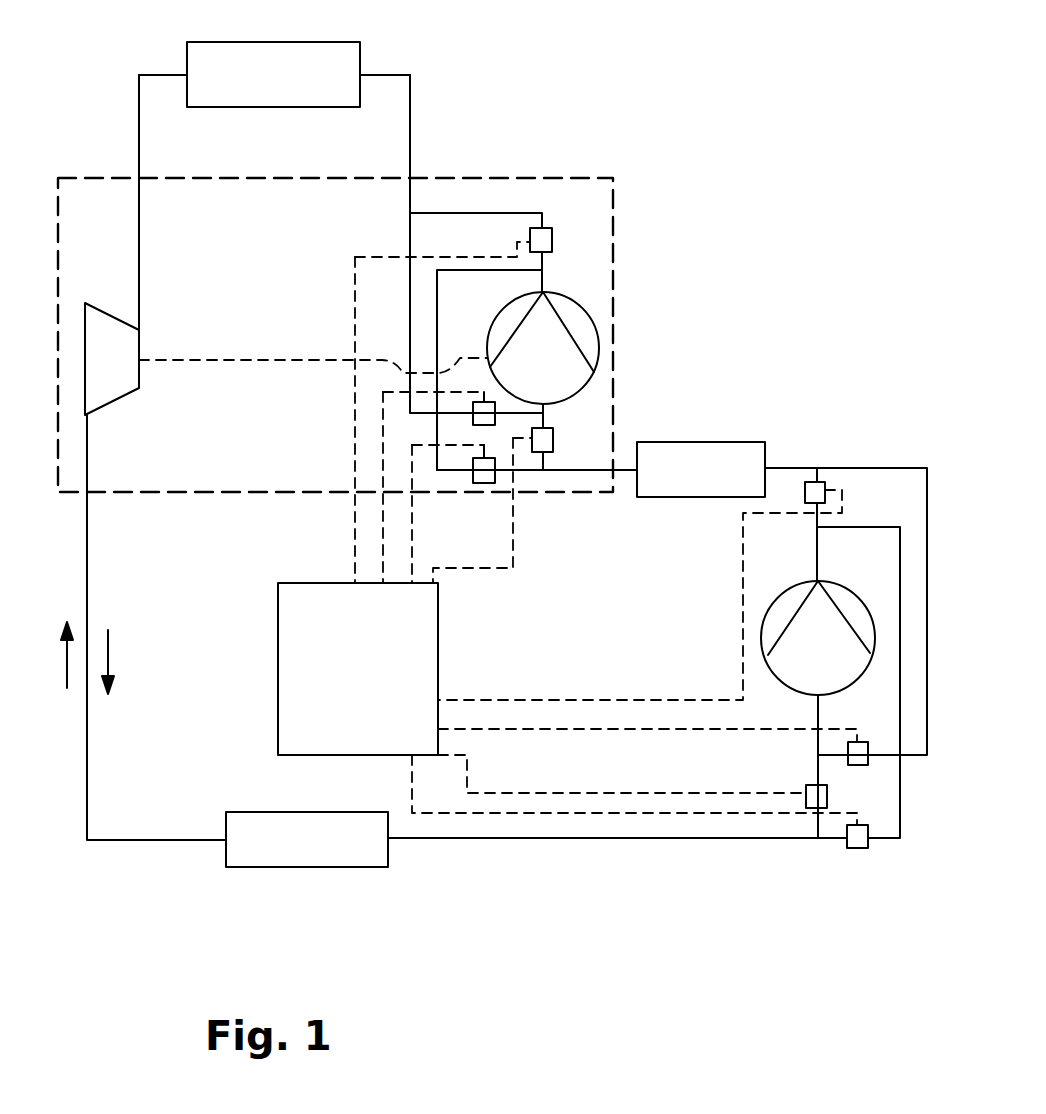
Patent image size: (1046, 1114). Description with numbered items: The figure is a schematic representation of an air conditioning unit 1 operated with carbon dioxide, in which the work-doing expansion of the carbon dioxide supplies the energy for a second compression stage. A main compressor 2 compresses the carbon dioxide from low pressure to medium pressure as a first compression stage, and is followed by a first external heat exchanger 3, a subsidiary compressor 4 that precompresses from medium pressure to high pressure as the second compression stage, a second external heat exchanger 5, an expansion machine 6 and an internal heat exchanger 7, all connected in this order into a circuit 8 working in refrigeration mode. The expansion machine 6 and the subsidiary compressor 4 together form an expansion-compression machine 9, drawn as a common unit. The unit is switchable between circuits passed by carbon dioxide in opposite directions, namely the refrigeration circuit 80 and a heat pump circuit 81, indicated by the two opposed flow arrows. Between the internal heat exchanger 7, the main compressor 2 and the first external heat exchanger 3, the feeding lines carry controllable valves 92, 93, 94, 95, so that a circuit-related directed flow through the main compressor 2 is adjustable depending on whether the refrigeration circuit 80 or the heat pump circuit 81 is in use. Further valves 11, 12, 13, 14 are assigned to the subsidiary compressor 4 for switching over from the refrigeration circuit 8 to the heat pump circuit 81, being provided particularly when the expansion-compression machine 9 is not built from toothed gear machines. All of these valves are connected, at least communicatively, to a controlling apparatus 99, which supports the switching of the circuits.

The air conditioning unit 1 is at (663, 93).
The main compressor 2 is at (853, 670).
The first external heat exchanger 3 is at (738, 448).
The subsidiary compressor 4 is at (585, 372).
The second external heat exchanger 5 is at (328, 48).
The expansion machine 6 is at (112, 390).
The internal heat exchanger 7 is at (365, 857).
The refrigeration circuit 8 is at (90, 722).
The expansion-compression machine 9 is at (613, 250).
The valve 11 is at (552, 237).
The valve 12 is at (565, 432).
The valve 13 is at (492, 483).
The valve 14 is at (477, 420).
The refrigeration circuit 80 is at (108, 650).
The heat pump circuit 81 is at (67, 690).
The controllable valve 92 is at (827, 795).
The controllable valve 93 is at (858, 850).
The controllable valve 94 is at (865, 762).
The controllable valve 95 is at (822, 480).
The controlling apparatus 99 is at (430, 640).